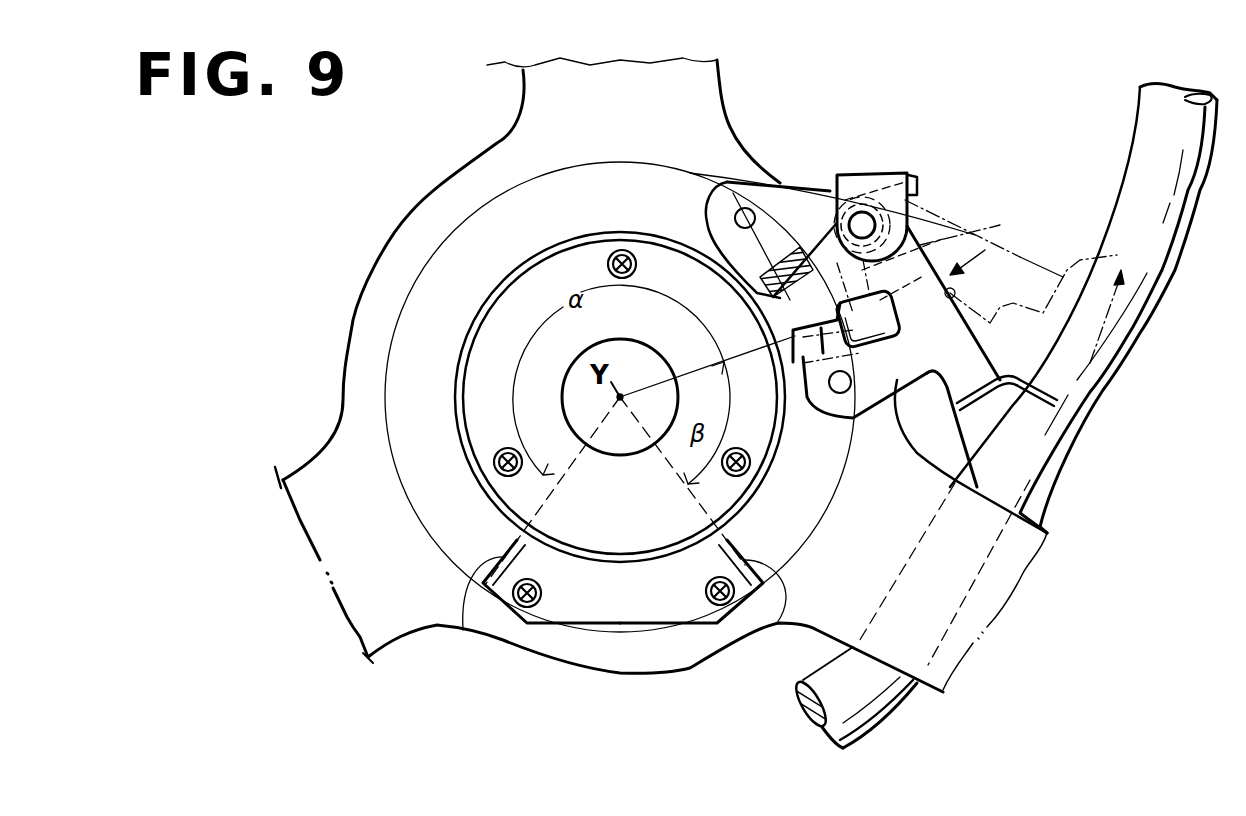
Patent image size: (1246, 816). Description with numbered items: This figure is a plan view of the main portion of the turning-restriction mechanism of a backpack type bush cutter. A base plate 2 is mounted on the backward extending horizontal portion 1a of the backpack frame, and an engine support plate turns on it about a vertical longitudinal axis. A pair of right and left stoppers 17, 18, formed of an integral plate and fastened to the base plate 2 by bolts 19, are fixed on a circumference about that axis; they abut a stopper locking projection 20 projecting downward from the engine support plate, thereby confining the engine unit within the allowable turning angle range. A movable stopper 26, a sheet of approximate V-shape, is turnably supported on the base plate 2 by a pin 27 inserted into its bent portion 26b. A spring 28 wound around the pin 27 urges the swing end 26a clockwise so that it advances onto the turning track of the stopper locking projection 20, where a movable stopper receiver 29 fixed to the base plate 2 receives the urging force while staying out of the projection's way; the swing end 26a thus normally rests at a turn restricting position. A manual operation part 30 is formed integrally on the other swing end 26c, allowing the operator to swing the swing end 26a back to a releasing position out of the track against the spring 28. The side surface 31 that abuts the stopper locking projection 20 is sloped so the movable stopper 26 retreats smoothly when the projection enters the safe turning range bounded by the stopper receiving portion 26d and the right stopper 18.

The base plate 2 is at (378, 298).
The left stopper 17 is at (480, 565).
The right stopper 18 is at (785, 615).
The bolts 19 is at (533, 608).
The stopper locking projection 20 is at (787, 262).
The side surface 31 is at (820, 326).
The movable stopper 26 is at (972, 275).
The swing end 26a is at (768, 290).
The bent portion 26b is at (947, 253).
The other swing end 26c is at (967, 370).
The stopper receiving portion 26d is at (812, 425).
The pin 27 is at (866, 222).
The spring 28 is at (935, 240).
The movable stopper receiver 29 is at (887, 352).
The manual operation part 30 is at (1040, 400).
The horizontal portion 1a is at (1165, 118).